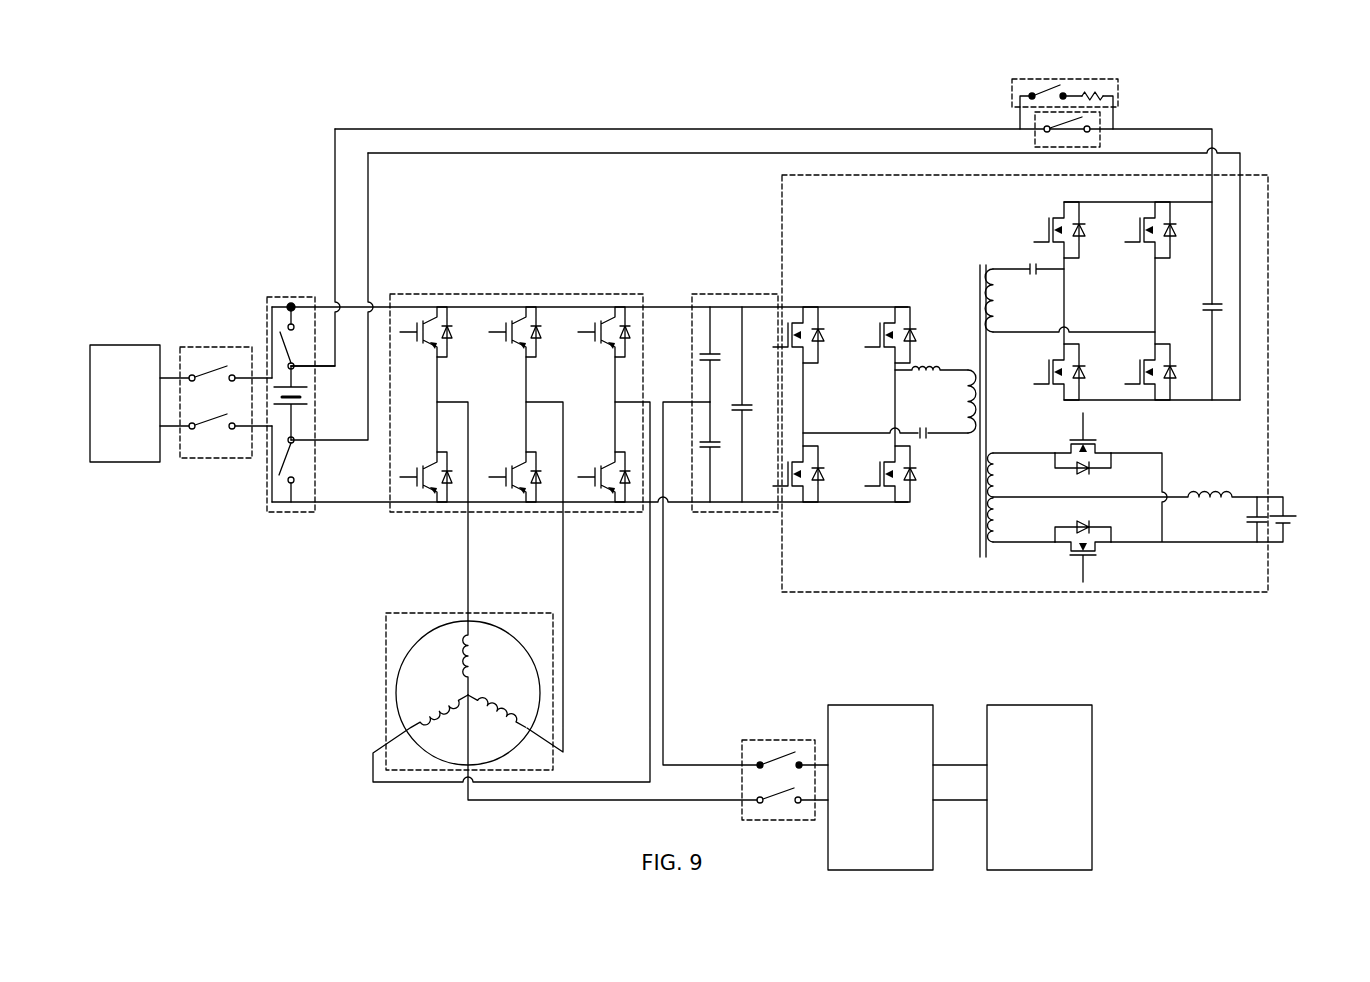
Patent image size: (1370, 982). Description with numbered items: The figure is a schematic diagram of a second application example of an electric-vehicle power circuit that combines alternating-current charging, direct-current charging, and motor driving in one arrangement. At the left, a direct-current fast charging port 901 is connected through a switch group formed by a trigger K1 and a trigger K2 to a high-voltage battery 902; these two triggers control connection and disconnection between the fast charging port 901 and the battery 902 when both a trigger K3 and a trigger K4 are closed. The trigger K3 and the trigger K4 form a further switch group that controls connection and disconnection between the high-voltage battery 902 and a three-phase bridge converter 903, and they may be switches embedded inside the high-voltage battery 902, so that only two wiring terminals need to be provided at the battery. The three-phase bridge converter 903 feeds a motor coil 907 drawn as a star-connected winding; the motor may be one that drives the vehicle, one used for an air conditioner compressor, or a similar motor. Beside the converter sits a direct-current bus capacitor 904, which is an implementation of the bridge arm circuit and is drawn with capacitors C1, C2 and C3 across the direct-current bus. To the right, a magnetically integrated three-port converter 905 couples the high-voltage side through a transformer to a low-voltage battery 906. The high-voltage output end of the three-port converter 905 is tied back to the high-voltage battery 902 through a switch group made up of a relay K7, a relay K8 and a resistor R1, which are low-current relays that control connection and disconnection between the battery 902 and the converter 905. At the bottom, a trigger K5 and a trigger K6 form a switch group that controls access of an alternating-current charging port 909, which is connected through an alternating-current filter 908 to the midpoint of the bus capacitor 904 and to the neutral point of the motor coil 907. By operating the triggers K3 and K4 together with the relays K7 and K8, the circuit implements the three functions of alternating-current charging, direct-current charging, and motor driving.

The direct-current fast charging port 901 is at (125, 403).
The high-voltage battery 902 is at (264, 435).
The three-phase bridge converter 903 is at (467, 300).
The direct-current bus capacitor 904 is at (723, 368).
The magnetically integrated three-port converter 905 is at (928, 573).
The low-voltage battery 906 is at (1285, 500).
The motor coil 907 is at (400, 652).
The alternating-current filter 908 is at (880, 787).
The alternating-current charging port 909 is at (1039, 787).
The trigger K1 is at (216, 386).
The trigger K2 is at (216, 453).
The trigger K3 is at (307, 338).
The trigger K4 is at (306, 469).
The trigger K5 is at (785, 766).
The trigger K6 is at (792, 823).
The relay K7 is at (1088, 90).
The relay K8 is at (717, 145).
The resistor R1 is at (1123, 95).
The capacitor C1 is at (696, 354).
The capacitor C2 is at (694, 452).
The capacitor C3 is at (753, 404).